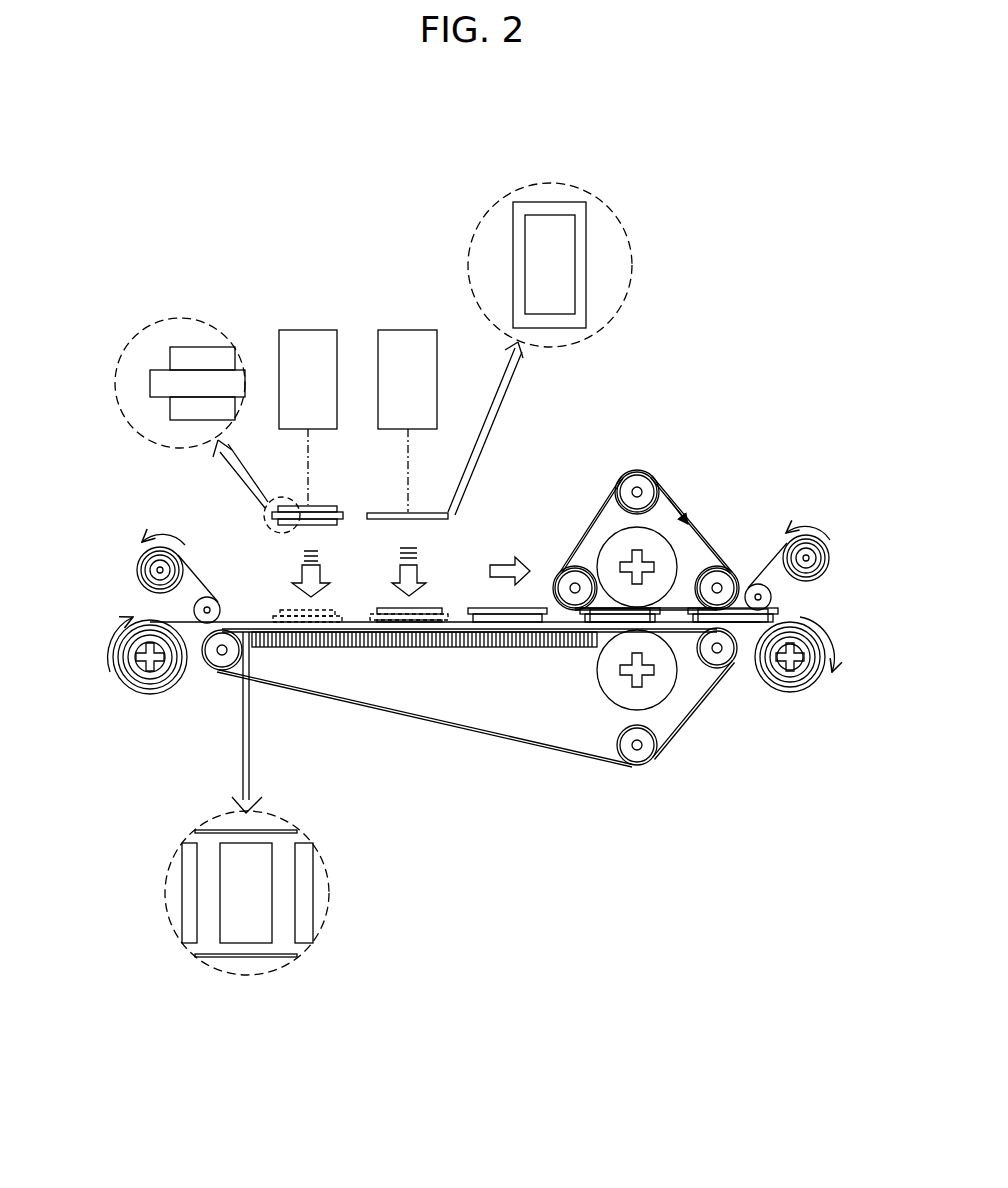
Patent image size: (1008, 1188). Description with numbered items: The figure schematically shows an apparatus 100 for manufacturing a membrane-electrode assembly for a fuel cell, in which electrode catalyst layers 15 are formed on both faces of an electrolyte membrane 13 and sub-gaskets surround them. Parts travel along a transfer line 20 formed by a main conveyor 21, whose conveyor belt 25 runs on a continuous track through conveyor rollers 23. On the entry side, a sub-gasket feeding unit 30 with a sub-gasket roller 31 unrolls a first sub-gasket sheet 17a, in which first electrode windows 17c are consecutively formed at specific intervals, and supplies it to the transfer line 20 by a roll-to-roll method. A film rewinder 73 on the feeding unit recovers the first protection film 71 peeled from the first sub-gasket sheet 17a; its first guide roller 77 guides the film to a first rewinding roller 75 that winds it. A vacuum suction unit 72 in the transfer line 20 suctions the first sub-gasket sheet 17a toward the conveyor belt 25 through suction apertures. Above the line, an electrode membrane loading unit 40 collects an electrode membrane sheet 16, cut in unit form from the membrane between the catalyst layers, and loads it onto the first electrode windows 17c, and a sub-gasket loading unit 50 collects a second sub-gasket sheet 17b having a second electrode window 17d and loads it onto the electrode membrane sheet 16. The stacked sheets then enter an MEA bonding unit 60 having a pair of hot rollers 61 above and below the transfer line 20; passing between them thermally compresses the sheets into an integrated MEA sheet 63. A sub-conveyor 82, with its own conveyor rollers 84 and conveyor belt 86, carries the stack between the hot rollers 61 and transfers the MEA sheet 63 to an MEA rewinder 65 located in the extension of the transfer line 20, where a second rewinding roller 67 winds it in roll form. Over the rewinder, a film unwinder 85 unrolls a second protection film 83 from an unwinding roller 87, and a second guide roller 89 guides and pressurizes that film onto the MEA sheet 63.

The apparatus for manufacturing a membrane-electrode assembly 100 is at (453, 134).
The electrolyte membrane 13 is at (157, 375).
The electrode catalyst layers 15 is at (200, 352).
The electrode membrane sheet 16 is at (262, 500).
The first sub-gasket sheet 17a is at (200, 655).
The second sub-gasket sheet 17b is at (430, 508).
The first electrode windows 17c is at (245, 925).
The second electrode window 17d is at (560, 233).
The transfer line 20 is at (262, 610).
The main conveyor 21 is at (423, 723).
The conveyor rollers 23 is at (222, 670).
The conveyor belt 25 is at (527, 748).
The sub-gasket feeding unit 30 is at (130, 698).
The sub-gasket roller 31 is at (152, 660).
The electrode membrane loading unit 40 is at (308, 325).
The sub-gasket loading unit 50 is at (408, 325).
The MEA bonding unit 60 is at (617, 608).
The hot rollers 61 is at (645, 540).
The MEA sheet 63 is at (790, 695).
The MEA rewinder 65 is at (812, 692).
The second rewinding roller 67 is at (783, 665).
The first protection film 71 is at (200, 580).
The vacuum suction unit 72 is at (405, 648).
The film rewinder 73 is at (180, 548).
The first rewinding roller 75 is at (152, 560).
The first guide roller 77 is at (194, 610).
The sub-conveyor 82 is at (643, 472).
The second protection film 83 is at (767, 571).
The conveyor rollers 84 is at (628, 490).
The film unwinder 85 is at (826, 538).
The conveyor belt 86 is at (592, 518).
The unwinding roller 87 is at (806, 552).
The second guide roller 89 is at (772, 598).